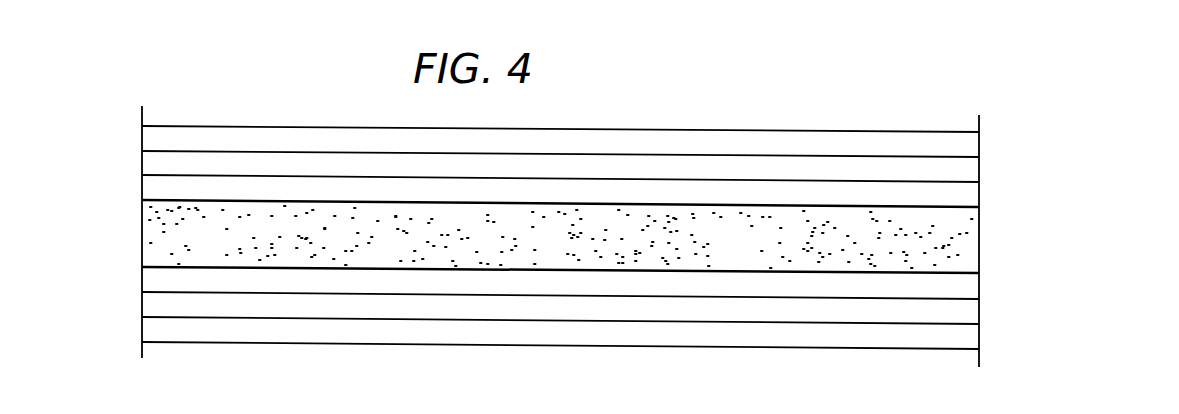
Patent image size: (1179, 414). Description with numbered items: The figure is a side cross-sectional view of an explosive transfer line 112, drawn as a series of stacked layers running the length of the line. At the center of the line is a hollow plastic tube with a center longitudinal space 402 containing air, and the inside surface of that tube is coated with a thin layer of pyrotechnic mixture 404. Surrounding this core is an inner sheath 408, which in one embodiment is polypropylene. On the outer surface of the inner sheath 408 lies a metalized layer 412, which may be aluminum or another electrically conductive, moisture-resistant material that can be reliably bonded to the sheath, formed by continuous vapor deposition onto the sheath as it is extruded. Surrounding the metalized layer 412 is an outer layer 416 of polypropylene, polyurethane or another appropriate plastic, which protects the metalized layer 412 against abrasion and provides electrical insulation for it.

The explosive transfer line 112 is at (775, 115).
The metalized layer 412 is at (981, 157).
The center longitudinal space 402 is at (167, 236).
The pyrotechnic mixture 404 is at (962, 273).
The inner sheath 408 is at (962, 314).
The outer layer 416 is at (830, 332).